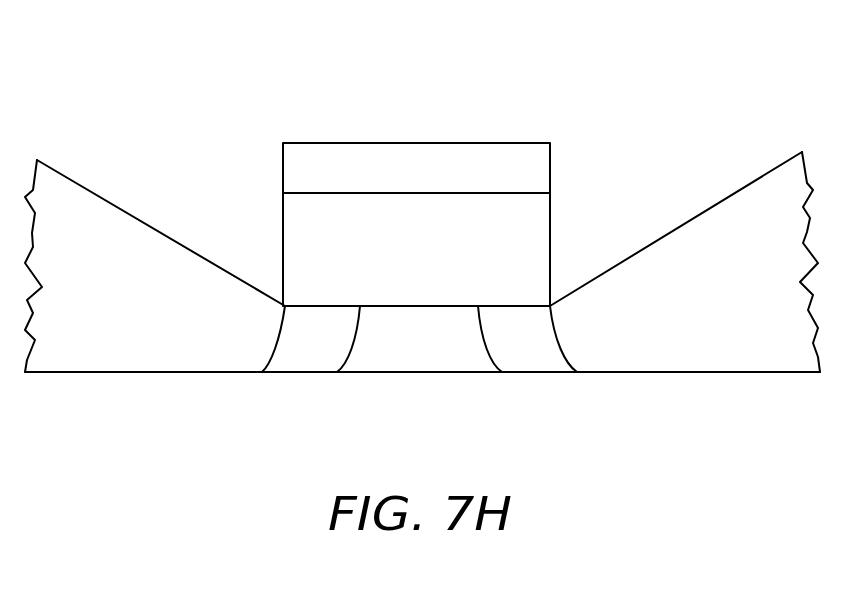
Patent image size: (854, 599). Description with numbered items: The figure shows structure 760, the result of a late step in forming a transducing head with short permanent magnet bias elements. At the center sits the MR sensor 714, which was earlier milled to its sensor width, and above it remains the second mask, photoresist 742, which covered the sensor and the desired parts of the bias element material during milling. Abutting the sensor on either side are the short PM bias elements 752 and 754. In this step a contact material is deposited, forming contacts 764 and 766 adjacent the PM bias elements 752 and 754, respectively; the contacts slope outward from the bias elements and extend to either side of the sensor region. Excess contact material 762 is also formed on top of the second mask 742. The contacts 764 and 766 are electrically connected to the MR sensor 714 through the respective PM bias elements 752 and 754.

The MR sensor 714 is at (442, 347).
The photoresist 742 is at (450, 245).
The short PM bias element 752 is at (317, 347).
The short PM bias element 754 is at (518, 337).
The structure 760 is at (488, 160).
The excess contact material 762 is at (482, 180).
The contact 764 is at (103, 237).
The contact 766 is at (707, 248).